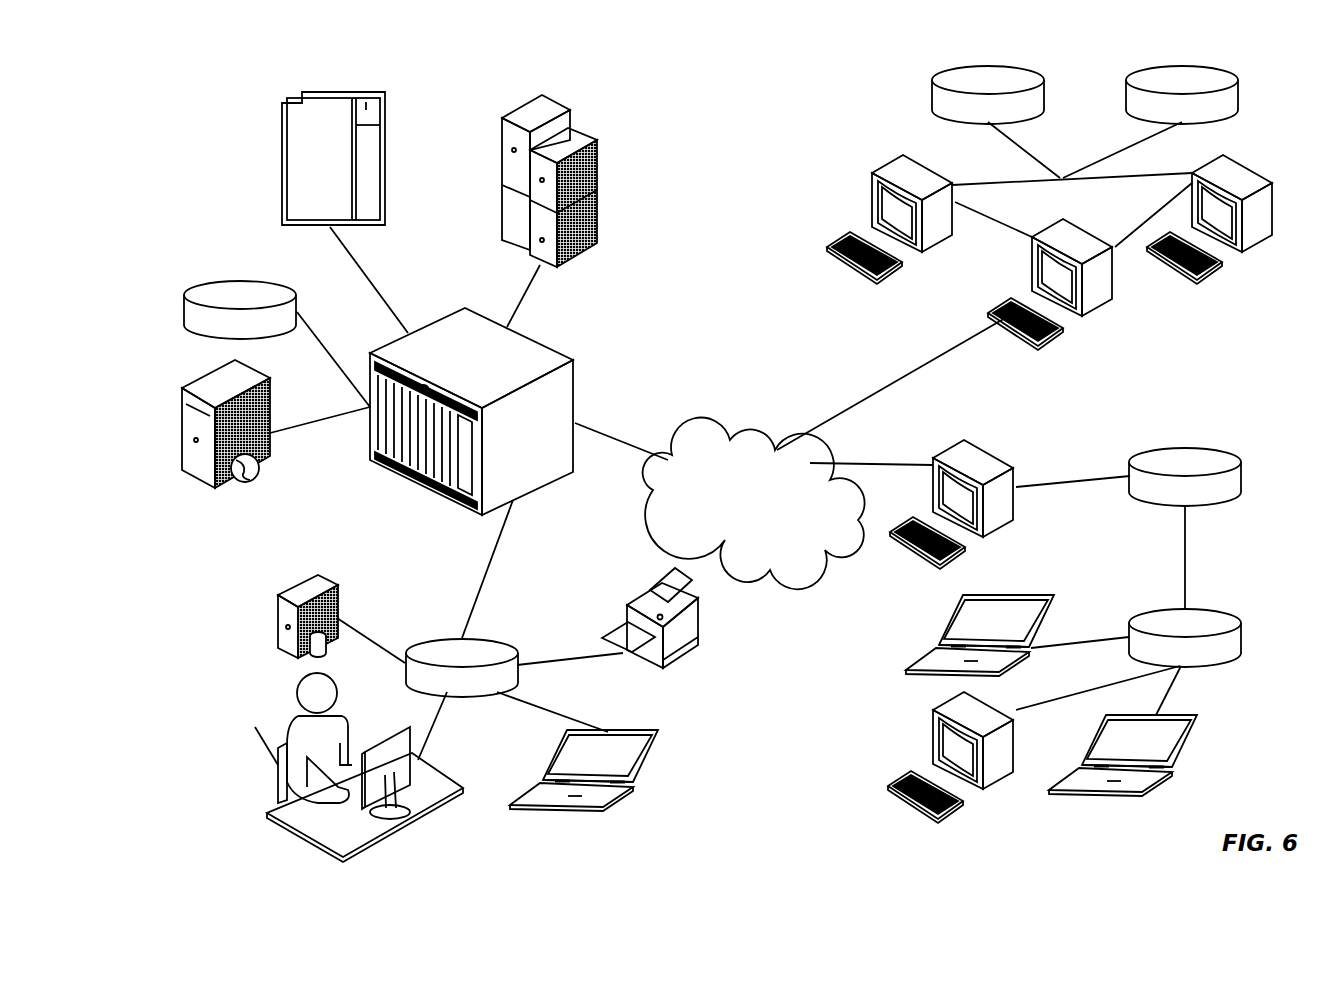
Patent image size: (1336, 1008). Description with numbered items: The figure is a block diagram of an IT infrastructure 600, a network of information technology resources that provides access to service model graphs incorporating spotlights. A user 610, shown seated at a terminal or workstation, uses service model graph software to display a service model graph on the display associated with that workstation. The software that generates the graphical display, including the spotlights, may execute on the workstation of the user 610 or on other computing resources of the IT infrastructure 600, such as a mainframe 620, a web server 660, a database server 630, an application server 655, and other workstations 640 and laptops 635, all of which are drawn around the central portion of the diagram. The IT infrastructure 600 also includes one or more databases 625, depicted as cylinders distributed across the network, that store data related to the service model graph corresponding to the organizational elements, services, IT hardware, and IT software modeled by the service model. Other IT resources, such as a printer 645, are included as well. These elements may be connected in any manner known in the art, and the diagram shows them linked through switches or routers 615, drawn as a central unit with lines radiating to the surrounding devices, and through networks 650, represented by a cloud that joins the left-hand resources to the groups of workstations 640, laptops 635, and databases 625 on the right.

The IT infrastructure 600 is at (740, 132).
The user 610 is at (333, 767).
The switches or routers 615 is at (514, 404).
The mainframe 620 is at (372, 152).
The databases 625 is at (743, 388).
The database server 630 is at (343, 593).
The laptops 635 is at (853, 730).
The workstations 640 is at (1057, 501).
The printer 645 is at (679, 645).
The networks 650 is at (754, 485).
The application server 655 is at (590, 181).
The web server 660 is at (267, 434).